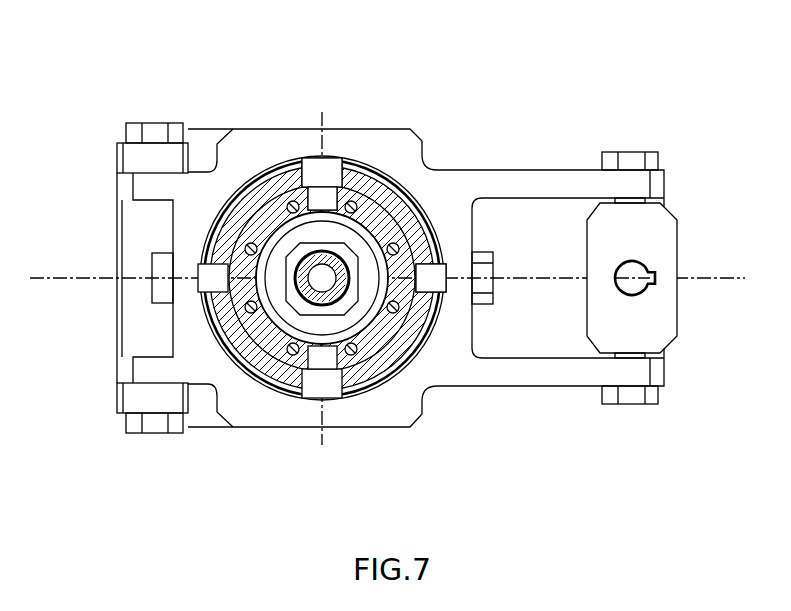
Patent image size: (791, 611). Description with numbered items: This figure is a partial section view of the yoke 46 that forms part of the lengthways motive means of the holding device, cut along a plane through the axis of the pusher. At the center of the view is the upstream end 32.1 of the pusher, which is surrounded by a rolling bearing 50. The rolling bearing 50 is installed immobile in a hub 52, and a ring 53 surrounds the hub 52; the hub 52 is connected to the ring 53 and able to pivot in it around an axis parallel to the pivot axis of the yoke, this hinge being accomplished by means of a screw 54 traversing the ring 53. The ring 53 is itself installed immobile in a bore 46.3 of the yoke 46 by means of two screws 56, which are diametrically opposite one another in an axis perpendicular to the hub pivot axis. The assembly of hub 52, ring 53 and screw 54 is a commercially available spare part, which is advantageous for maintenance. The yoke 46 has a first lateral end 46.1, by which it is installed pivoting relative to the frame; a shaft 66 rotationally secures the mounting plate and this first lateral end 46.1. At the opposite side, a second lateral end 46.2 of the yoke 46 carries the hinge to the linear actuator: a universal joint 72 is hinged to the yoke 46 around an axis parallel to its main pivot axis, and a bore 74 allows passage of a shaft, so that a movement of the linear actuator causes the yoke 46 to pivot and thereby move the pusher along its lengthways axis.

The yoke 46 is at (441, 60).
The first lateral end 46.1 is at (143, 363).
The second lateral end 46.2 is at (640, 182).
The bore 46.3 is at (431, 208).
The rolling bearing 50 is at (357, 308).
The hub 52 is at (368, 207).
The ring 53 is at (271, 177).
The screw 54 is at (323, 385).
The screws 56 is at (210, 276).
The shaft 66 is at (155, 427).
The universal joint 72 is at (664, 230).
The bore 74 is at (633, 293).
The upstream end 32.1 is at (308, 294).